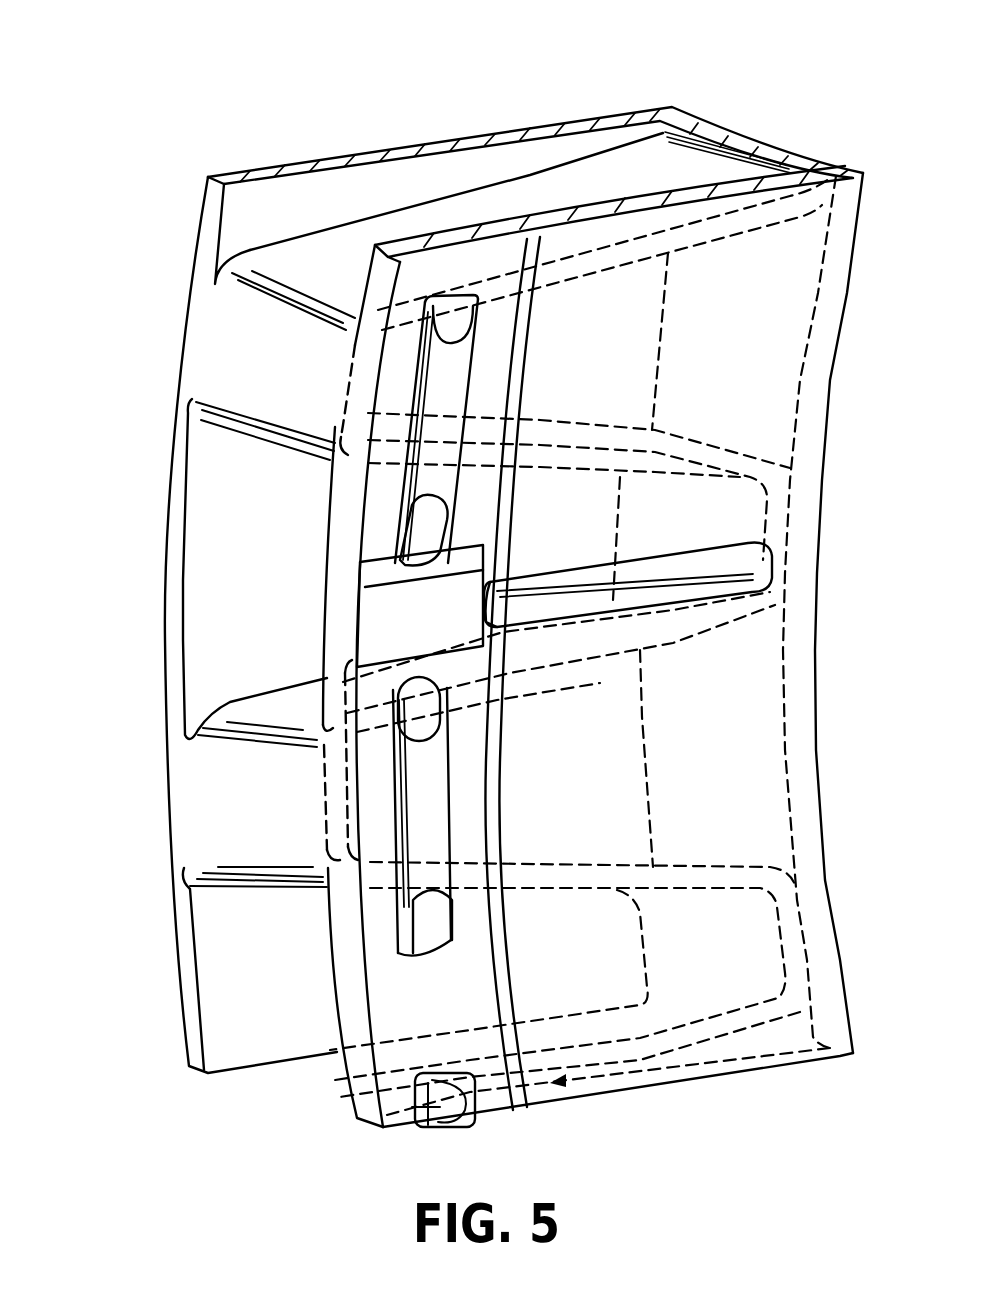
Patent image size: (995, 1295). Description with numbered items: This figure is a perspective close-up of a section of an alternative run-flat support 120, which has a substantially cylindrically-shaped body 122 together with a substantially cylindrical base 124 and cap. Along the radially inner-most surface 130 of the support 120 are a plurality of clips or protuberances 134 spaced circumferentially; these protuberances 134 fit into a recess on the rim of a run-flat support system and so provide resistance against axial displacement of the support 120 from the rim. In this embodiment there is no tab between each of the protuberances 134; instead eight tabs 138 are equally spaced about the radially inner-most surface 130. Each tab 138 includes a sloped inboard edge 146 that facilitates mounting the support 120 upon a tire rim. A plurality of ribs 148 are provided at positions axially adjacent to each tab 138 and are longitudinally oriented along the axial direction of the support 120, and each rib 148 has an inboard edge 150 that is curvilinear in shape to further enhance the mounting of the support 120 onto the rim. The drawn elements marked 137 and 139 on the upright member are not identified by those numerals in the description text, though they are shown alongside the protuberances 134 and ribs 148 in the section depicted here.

The run-flat support 120 is at (757, 84).
The body 122 is at (208, 351).
The base 124 is at (373, 268).
The radially inner-most surface 130 is at (830, 692).
The clips or protuberances 134 is at (450, 382).
The vertical bar web 137 is at (487, 387).
The tab 138 is at (398, 608).
The vertical bar flange 139 is at (518, 326).
The sloped inboard edge 146 is at (494, 570).
The rib 148 is at (636, 578).
The inboard edge 150 is at (780, 560).